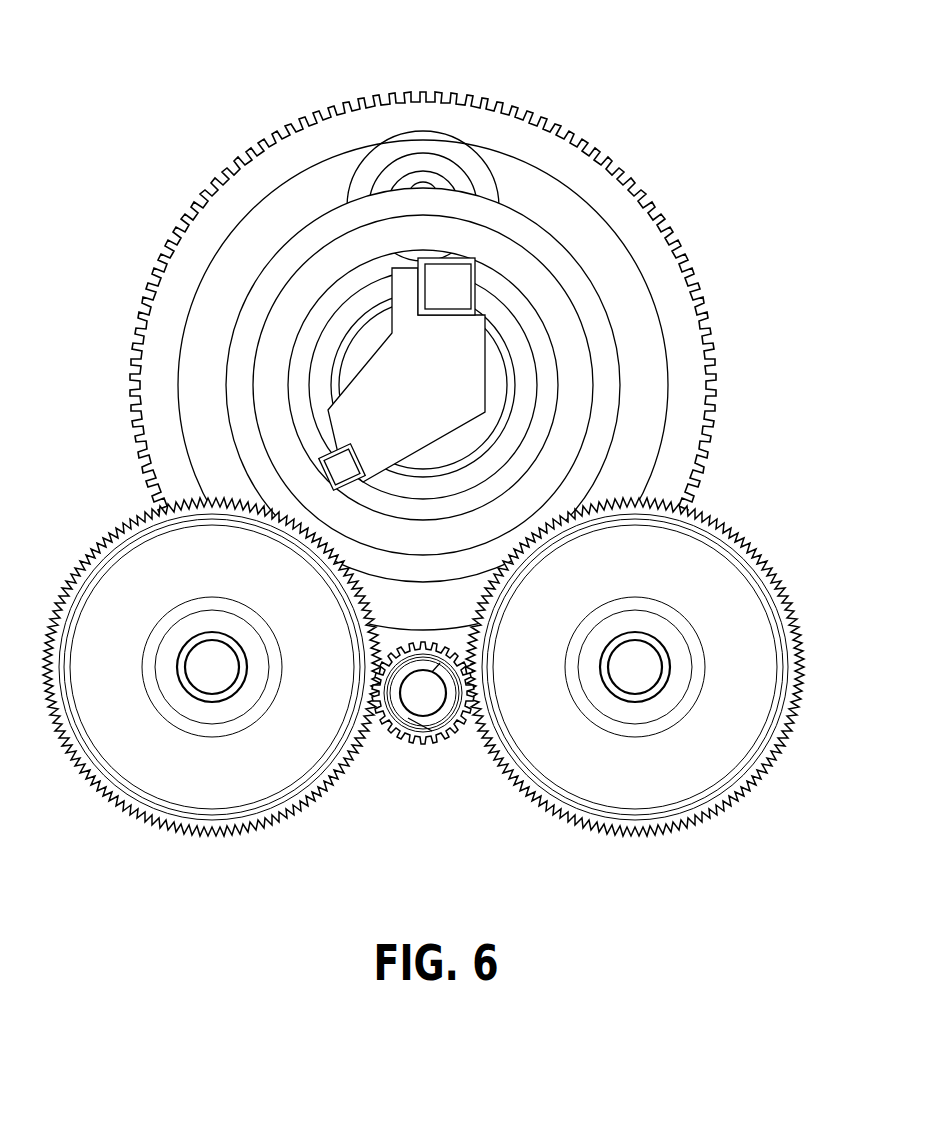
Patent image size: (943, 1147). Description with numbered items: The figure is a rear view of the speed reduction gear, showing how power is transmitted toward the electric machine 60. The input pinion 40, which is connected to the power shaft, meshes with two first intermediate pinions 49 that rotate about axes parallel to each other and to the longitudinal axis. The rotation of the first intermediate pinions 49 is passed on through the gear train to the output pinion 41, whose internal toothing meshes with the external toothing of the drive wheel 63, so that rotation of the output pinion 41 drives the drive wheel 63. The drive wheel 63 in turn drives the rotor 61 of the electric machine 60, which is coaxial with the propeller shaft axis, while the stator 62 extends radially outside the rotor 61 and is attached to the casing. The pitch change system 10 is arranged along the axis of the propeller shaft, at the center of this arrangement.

The pitch change system 10 is at (388, 390).
The input pinion 40 is at (432, 731).
The output pinion 41 is at (548, 168).
The first intermediate pinions 49 is at (157, 572).
The electric machine 60 is at (607, 312).
The rotor 61 is at (582, 388).
The stator 62 is at (558, 257).
The drive wheel 63 is at (452, 175).